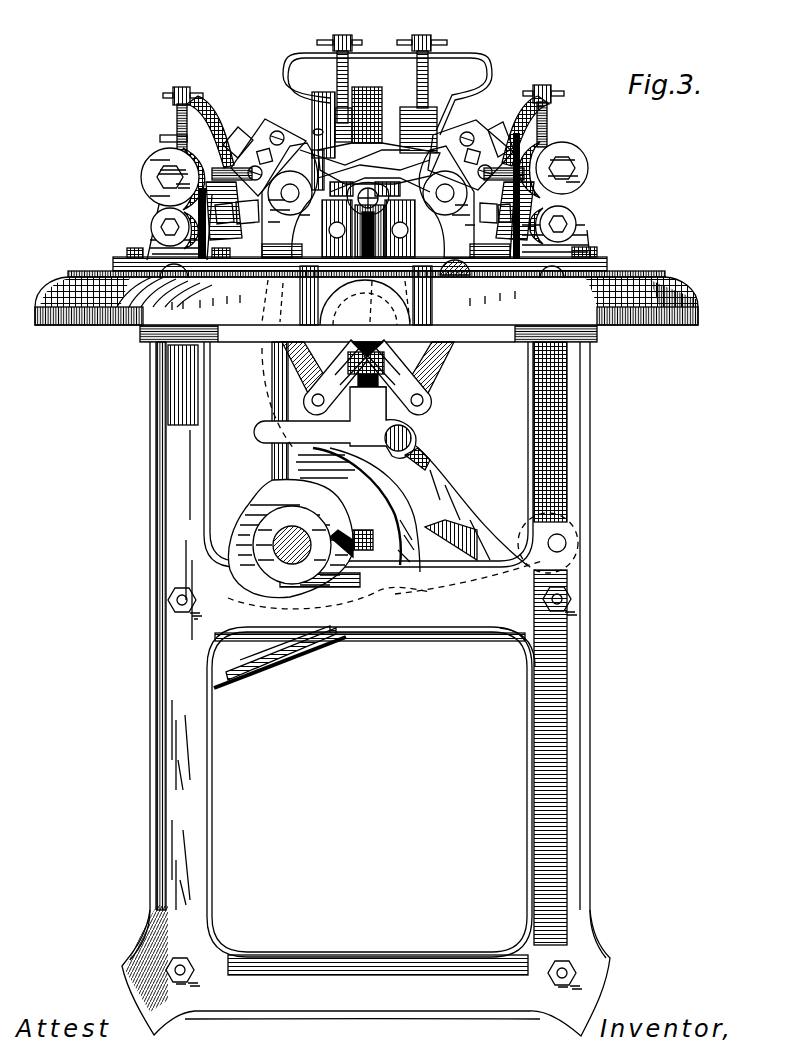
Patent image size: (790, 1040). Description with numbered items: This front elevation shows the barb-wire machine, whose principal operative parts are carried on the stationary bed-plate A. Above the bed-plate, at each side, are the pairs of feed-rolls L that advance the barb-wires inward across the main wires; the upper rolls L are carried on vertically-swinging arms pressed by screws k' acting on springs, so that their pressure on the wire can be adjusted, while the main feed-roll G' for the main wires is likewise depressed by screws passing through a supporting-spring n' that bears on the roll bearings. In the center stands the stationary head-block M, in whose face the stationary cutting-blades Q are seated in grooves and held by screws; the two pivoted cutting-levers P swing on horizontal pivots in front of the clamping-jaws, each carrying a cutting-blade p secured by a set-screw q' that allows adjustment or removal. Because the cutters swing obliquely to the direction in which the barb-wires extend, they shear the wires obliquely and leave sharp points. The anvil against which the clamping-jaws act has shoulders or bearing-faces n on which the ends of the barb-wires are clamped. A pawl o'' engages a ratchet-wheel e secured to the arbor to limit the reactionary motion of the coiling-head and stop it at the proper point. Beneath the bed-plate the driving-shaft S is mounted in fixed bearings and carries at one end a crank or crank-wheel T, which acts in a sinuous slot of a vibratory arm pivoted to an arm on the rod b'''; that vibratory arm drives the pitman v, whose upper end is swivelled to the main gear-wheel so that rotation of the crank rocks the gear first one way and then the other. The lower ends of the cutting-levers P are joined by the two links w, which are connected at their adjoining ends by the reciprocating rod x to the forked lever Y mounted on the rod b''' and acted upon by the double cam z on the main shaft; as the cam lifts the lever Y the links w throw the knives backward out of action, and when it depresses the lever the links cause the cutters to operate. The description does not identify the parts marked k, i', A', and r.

The stationary bed-plate A is at (366, 640).
The left standard post k is at (173, 173).
The screws k' is at (550, 171).
The feed-rolls L is at (153, 196).
The curved bracket arm i' is at (395, 157).
The supporting-spring n' is at (387, 79).
The main feed-roll G' is at (379, 96).
The stationary head-block M is at (368, 165).
The pawl o'' is at (403, 143).
The shoulders or bearing-faces n is at (369, 200).
The inclined plate A' is at (372, 151).
The set-screw q' is at (370, 130).
The cutting-blade p is at (240, 128).
The cutting-levers P is at (368, 200).
The ratchet-wheel e is at (237, 212).
The stationary cutting-blades Q is at (495, 221).
The links w is at (312, 362).
The vertical rod r is at (272, 396).
The reciprocating rod x is at (369, 416).
The forked lever Y is at (428, 471).
The driving-shaft S is at (273, 548).
The crank or crank-wheel T is at (282, 548).
The double cam z is at (332, 662).
The pitman v is at (274, 668).
The rod b''' is at (575, 543).